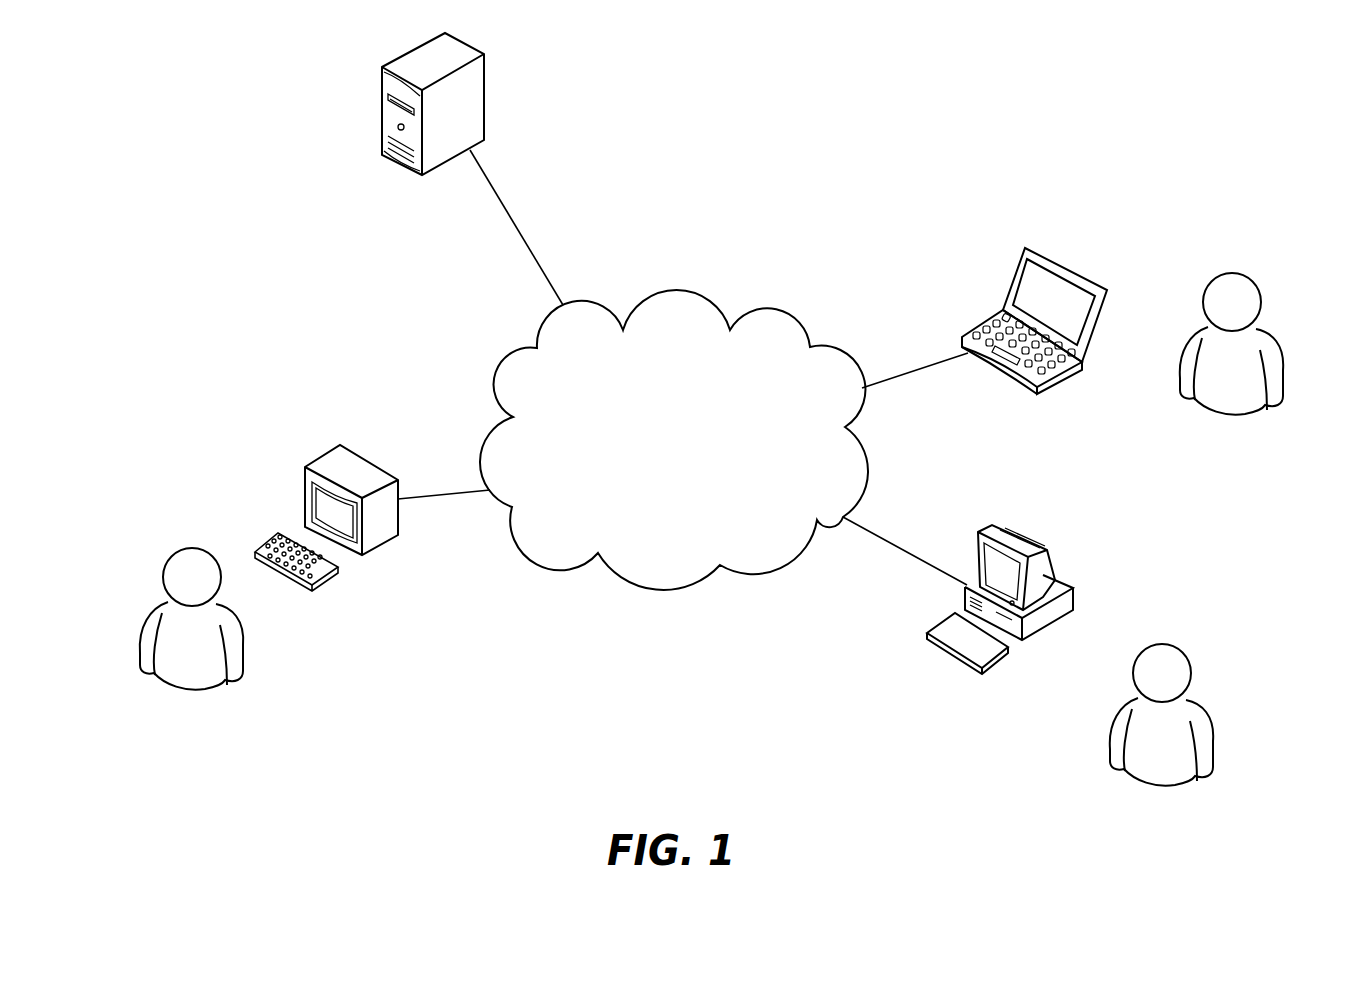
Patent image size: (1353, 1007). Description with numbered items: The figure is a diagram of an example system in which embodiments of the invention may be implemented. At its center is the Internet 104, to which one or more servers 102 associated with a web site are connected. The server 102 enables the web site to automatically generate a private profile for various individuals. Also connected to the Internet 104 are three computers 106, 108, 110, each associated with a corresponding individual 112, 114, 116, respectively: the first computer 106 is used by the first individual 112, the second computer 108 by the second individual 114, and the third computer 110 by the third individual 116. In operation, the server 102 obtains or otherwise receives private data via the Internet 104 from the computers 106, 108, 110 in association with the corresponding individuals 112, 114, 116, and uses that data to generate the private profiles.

The server 102 is at (487, 98).
The Internet 104 is at (655, 464).
The computer 106 is at (360, 453).
The computer 108 is at (1057, 263).
The computer 110 is at (1052, 547).
The individual 112 is at (205, 546).
The individual 114 is at (1258, 298).
The individual 116 is at (1188, 660).